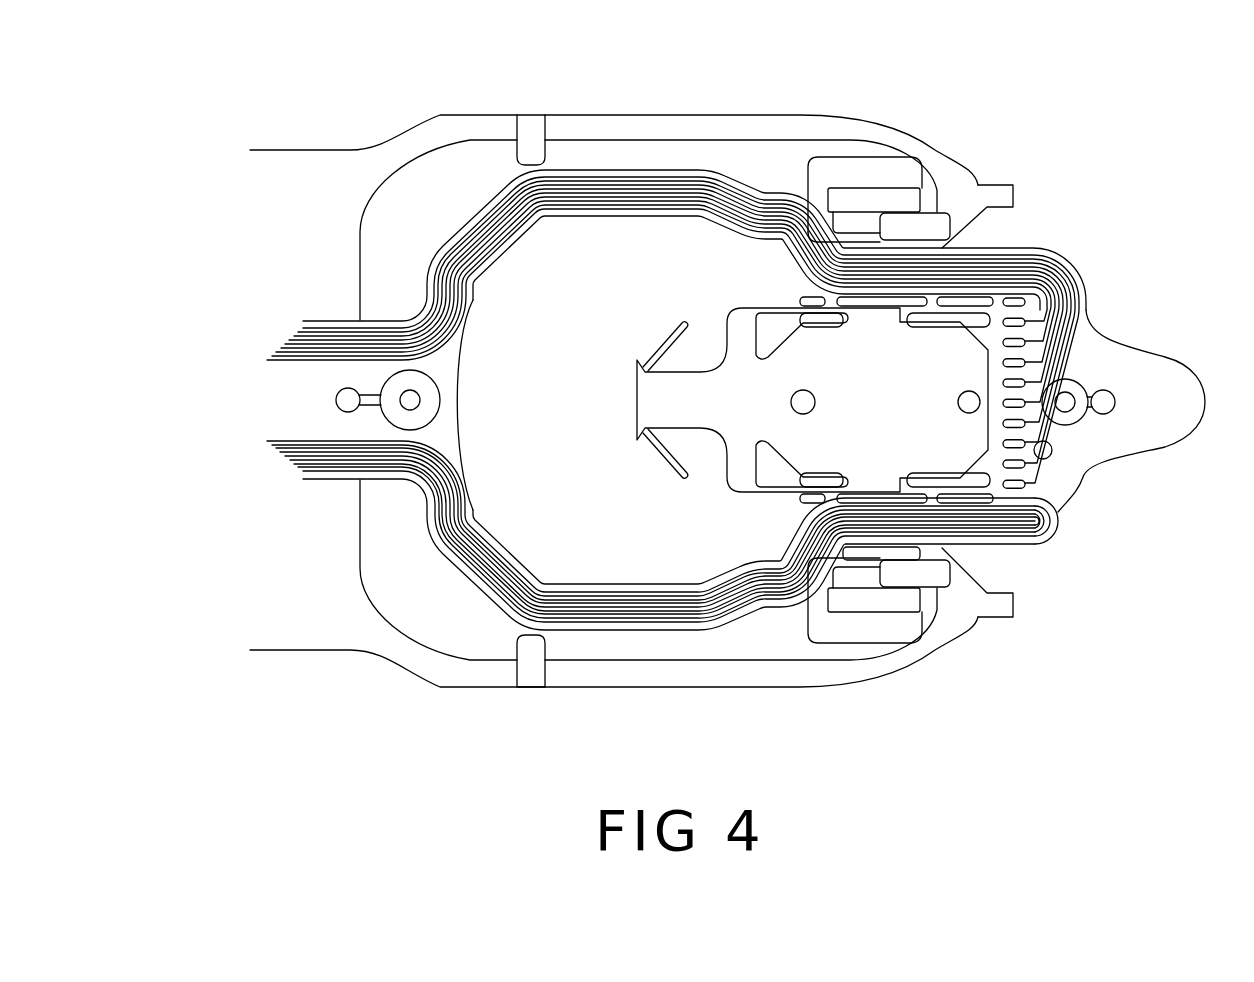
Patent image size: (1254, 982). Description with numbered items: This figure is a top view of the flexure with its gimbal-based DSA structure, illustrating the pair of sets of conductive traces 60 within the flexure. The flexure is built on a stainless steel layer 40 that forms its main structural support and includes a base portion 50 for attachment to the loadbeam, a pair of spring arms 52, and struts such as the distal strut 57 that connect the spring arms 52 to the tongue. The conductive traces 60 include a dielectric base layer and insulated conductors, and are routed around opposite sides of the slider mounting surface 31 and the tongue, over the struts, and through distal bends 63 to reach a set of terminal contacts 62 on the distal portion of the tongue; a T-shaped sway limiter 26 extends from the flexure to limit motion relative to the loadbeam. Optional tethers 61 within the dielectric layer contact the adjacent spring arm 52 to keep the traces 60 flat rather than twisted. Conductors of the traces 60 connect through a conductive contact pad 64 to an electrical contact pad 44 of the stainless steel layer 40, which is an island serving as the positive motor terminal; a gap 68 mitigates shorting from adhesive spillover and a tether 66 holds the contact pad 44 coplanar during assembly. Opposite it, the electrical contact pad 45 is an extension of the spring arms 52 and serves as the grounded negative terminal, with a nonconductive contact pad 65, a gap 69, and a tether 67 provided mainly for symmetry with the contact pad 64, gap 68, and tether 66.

The base portion 50 is at (257, 168).
The stainless steel layer 40 is at (303, 170).
The spring arms 52 is at (652, 113).
The tethers 61 is at (527, 147).
The conductive traces 60 is at (697, 188).
The electrical contact pad 45 is at (797, 171).
The gap 69 is at (881, 201).
The nonconductive contact pad 65 is at (897, 173).
The tether 67 is at (920, 221).
The distal strut 57 is at (947, 241).
The terminal contacts 62 is at (1020, 302).
The distal bends 63 is at (1084, 305).
The sway limiter 26 is at (645, 400).
The slider mounting surface 31 is at (896, 412).
The electrical contact pad 44 is at (798, 644).
The conductive contact pad 64 is at (842, 634).
The gap 68 is at (926, 585).
The tether 66 is at (935, 578).